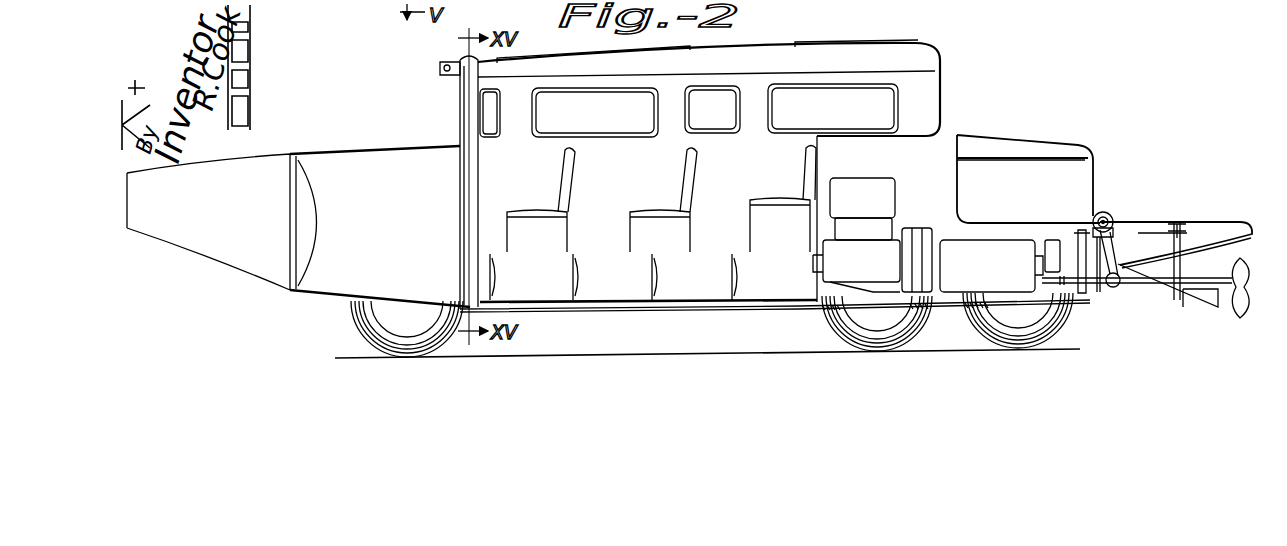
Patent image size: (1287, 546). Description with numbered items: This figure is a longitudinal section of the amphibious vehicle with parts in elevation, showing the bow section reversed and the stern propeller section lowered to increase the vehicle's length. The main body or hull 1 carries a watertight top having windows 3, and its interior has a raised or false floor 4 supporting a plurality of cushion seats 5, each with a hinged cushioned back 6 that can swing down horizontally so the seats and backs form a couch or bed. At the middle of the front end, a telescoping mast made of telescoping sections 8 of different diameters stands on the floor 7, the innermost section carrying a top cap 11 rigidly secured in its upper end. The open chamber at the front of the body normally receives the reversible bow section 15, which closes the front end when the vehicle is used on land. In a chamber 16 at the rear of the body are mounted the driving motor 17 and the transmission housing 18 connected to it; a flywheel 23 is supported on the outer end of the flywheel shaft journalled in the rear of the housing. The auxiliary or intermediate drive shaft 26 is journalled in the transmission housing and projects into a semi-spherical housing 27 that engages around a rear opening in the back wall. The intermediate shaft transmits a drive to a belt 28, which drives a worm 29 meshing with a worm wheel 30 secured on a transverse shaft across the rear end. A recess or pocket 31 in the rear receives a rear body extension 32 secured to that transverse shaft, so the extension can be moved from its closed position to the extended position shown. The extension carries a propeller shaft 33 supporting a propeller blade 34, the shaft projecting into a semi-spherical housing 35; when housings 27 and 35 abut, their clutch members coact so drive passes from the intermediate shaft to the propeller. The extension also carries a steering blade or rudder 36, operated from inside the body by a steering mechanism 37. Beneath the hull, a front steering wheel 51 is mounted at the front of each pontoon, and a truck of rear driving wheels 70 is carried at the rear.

The main body or hull 1 is at (387, 155).
The windows 3 is at (793, 120).
The raised or false floor 4 is at (577, 256).
The cushion seats 5 is at (647, 223).
The hinged cushioned back 6 is at (697, 170).
The floor 7 is at (688, 303).
The telescoping sections 8 is at (478, 197).
The top cap 11 is at (445, 62).
The reversible front end section or bow section 15 is at (222, 222).
The chamber 16 is at (958, 185).
The driving motor 17 is at (872, 235).
The transmission housing 18 is at (958, 258).
The flywheel 23 is at (1052, 244).
The auxiliary or intermediate drive shaft 26 is at (1073, 286).
The semi-spherical housing 27 is at (1111, 289).
The belt 28 is at (1086, 229).
The worm 29 is at (1117, 243).
The worm wheel 30 is at (1107, 220).
The recess or pocket 31 is at (958, 183).
The rear body extension 32 is at (1210, 223).
The propeller shaft 33 is at (1171, 291).
The propeller blade 34 is at (1240, 304).
The semi-spherical housing 35 is at (1116, 288).
The steering blade or rudder 36 is at (1188, 270).
The steering mechanism 37 is at (1175, 224).
The front steering wheel 51 is at (380, 329).
The rear driving wheels 70 is at (905, 334).